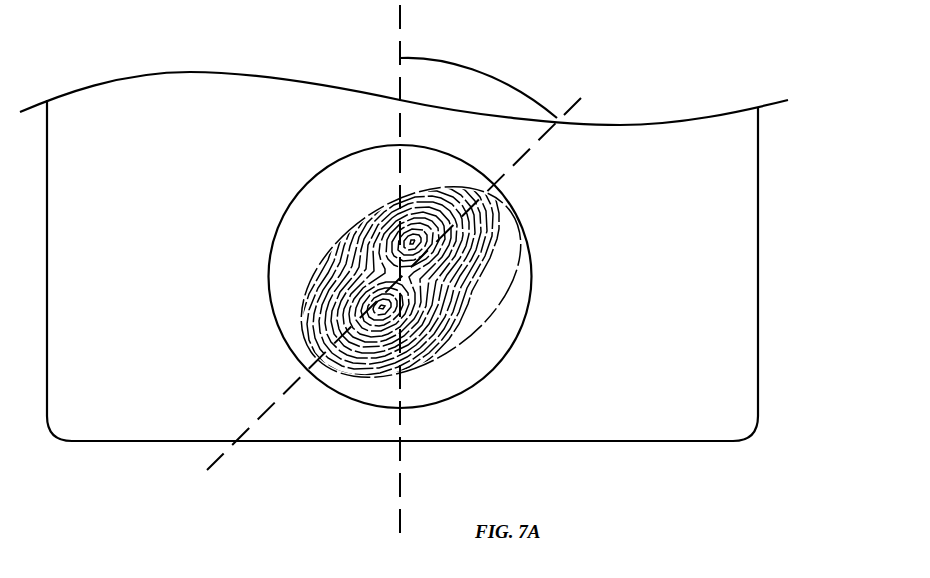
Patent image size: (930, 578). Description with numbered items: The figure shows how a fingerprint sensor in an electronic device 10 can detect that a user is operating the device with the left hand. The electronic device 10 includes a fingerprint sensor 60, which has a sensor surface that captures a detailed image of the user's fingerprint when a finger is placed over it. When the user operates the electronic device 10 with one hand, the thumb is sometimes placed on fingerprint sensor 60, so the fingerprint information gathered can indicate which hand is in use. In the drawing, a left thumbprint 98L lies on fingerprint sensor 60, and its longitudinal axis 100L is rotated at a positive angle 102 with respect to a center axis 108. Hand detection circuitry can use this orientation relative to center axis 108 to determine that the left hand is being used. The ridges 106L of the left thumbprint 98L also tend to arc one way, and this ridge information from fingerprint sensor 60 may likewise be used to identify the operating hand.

The electronic device 10 is at (740, 212).
The fingerprint sensor 60 is at (527, 279).
The left thumbprint 98L is at (317, 300).
The longitudinal axis 100L is at (527, 160).
The positive angle 102 is at (485, 70).
The ridges 106L is at (380, 213).
The center axis 108 is at (399, 62).